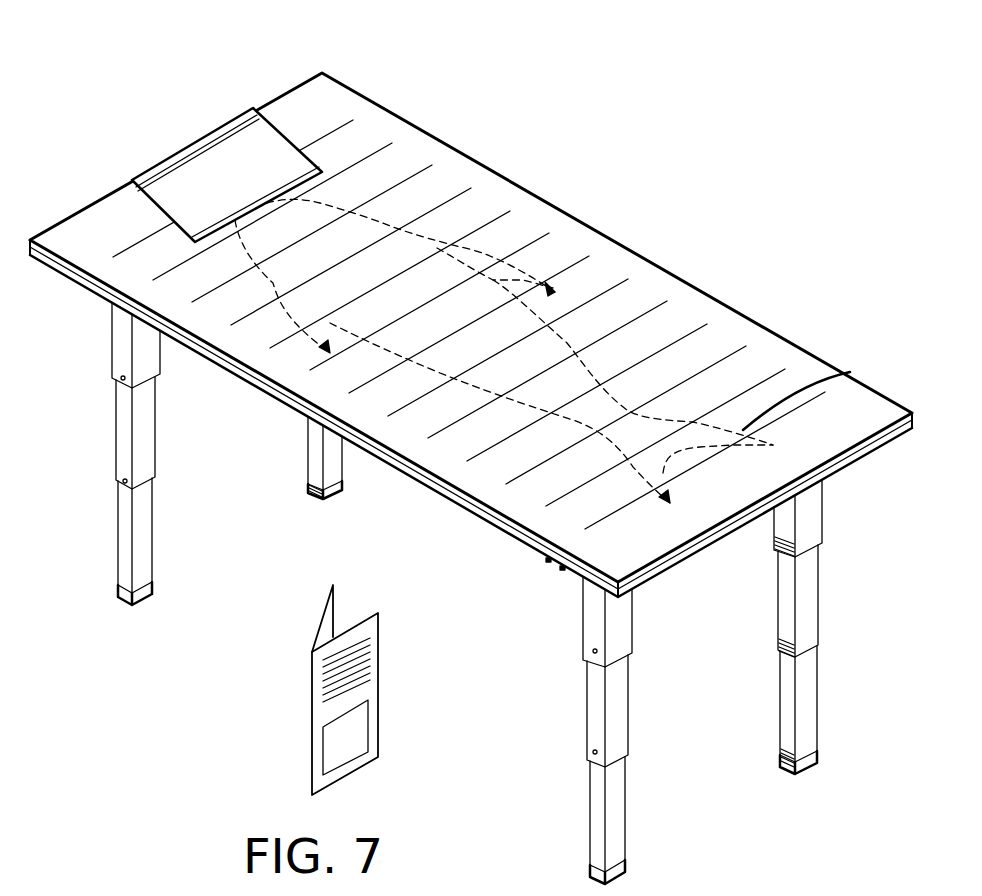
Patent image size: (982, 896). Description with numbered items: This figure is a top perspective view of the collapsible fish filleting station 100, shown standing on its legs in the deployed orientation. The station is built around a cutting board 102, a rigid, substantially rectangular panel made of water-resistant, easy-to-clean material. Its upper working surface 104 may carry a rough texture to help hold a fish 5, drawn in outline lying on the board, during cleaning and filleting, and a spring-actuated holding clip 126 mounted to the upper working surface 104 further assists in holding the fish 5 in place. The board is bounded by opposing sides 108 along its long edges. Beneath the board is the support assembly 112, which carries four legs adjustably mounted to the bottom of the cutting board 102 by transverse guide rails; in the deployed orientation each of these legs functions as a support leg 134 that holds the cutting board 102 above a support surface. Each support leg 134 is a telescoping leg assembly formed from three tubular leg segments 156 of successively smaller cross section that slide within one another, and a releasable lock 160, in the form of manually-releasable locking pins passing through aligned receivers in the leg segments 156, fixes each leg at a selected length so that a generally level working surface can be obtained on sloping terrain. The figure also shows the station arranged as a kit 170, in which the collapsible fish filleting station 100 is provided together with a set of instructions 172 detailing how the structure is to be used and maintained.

The collapsible fish filleting station 100 is at (662, 186).
The cutting board 102 is at (283, 80).
The upper working surface 104 is at (715, 348).
The opposing sides 108 is at (780, 337).
The fish 5 is at (850, 372).
The spring-actuated holding clip 126 is at (187, 148).
The support leg 134 is at (288, 452).
The leg segments 156 is at (112, 341).
The releasable lock 160 is at (120, 378).
The support assembly 112 is at (245, 666).
The kit 170 is at (291, 726).
The instructions 172 is at (373, 762).